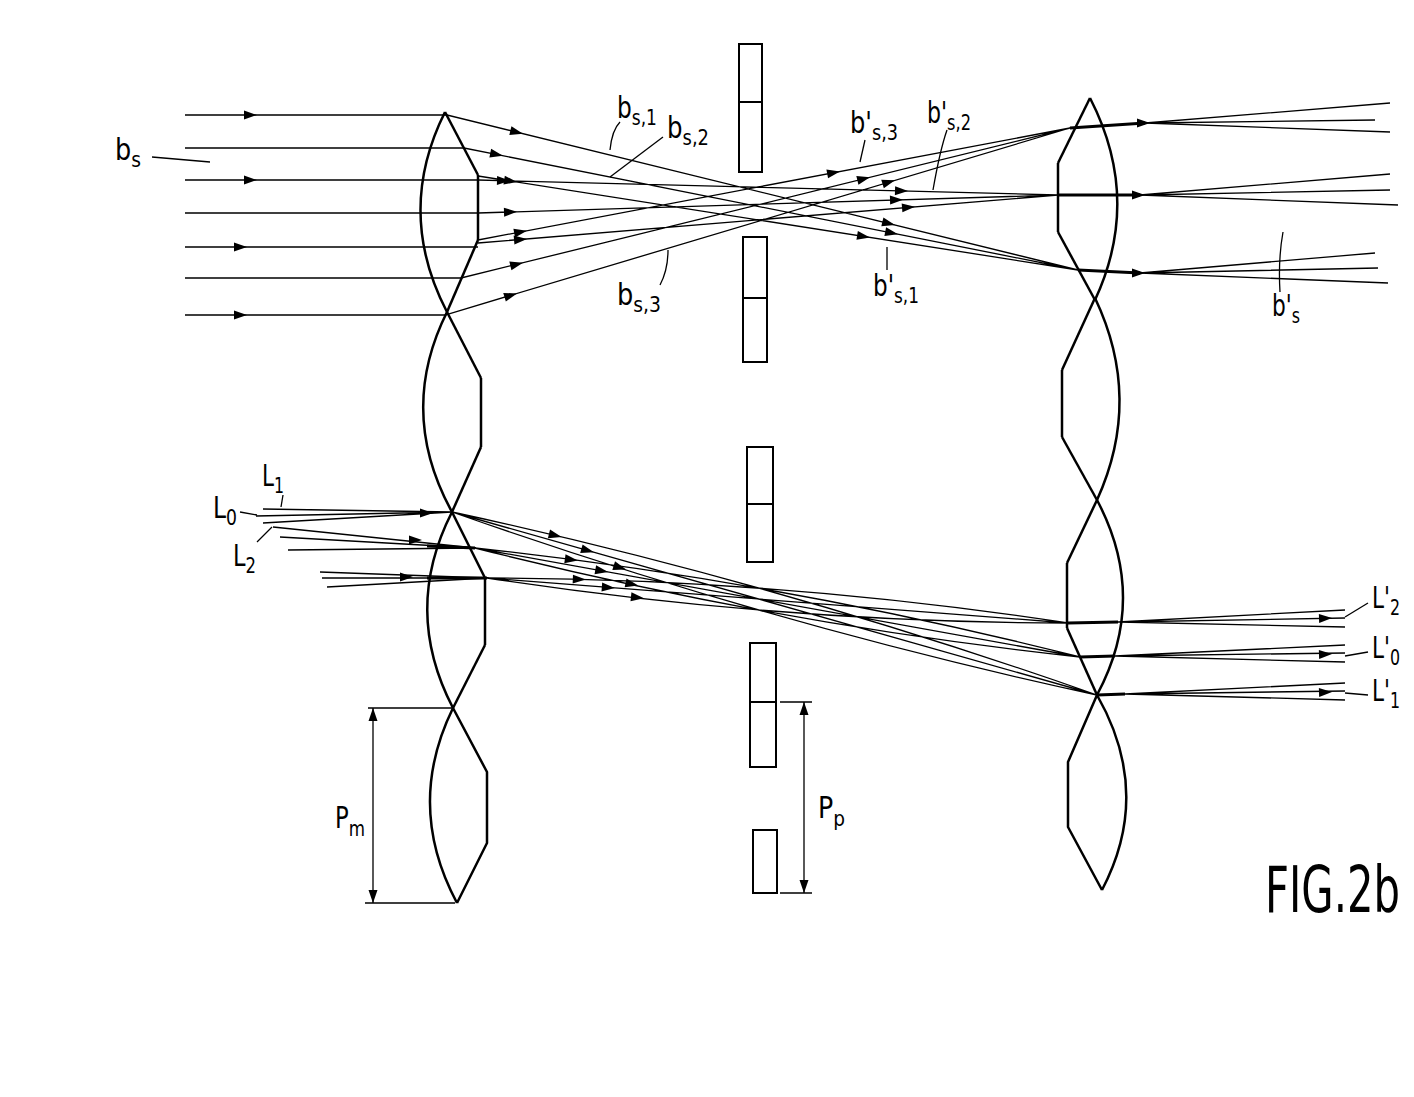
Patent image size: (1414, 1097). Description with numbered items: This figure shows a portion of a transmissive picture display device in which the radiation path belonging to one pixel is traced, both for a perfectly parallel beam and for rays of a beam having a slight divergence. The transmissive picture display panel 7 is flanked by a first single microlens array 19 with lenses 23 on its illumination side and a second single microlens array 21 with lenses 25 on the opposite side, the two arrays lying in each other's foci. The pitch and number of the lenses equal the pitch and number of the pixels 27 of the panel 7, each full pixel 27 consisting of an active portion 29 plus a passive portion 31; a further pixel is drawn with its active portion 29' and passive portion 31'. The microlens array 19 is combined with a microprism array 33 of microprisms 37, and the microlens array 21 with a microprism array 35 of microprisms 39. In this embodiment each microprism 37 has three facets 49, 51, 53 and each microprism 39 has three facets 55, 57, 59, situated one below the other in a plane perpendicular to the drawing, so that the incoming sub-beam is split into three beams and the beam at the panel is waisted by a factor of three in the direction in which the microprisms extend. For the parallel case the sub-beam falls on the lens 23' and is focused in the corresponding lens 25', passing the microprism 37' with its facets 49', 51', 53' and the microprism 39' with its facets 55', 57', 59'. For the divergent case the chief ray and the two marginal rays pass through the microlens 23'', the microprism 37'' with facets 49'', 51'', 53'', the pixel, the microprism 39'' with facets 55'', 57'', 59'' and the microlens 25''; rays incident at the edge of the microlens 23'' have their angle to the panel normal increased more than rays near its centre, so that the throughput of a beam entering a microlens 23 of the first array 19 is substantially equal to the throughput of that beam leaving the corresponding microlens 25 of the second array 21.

The picture display panel 7 is at (745, 871).
The first microlens array 19 is at (365, 880).
The second microlens array 21 is at (1127, 858).
The microlens 23 is at (416, 412).
The microlens 23' is at (413, 197).
The microlens 23'' is at (410, 610).
The microlens 25 is at (1136, 399).
The microlens 25' is at (1124, 184).
The microlens 25'' is at (1142, 597).
The pixel 27 is at (731, 305).
The active portion 29 is at (784, 475).
The transparent grating strip 29' is at (782, 203).
The passive portion 31 is at (782, 299).
The opaque grating strip 31' is at (779, 108).
The microprism array 33 is at (487, 870).
The microprism array 35 is at (1075, 862).
The microprism 37 is at (456, 410).
The microprism 37' is at (486, 205).
The microprism 37'' is at (465, 598).
The microprism 39 is at (1089, 399).
The lens body 39' is at (1078, 191).
The microprism 39'' is at (1093, 609).
The facet 49 is at (489, 479).
The lower prism facet 49' is at (504, 285).
The lower prism facet 49'' is at (490, 679).
The facet 51 is at (506, 412).
The planar facet 51' is at (535, 171).
The planar facet 51'' is at (515, 611).
The facet 53 is at (479, 343).
The upper prism facet 53' is at (470, 127).
The upper prism facet 53'' is at (507, 530).
The facet 55 is at (1057, 468).
The lower prism facet 55' is at (1056, 273).
The lower prism facet 55'' is at (1053, 680).
The facet 57 is at (1032, 403).
The planar facet 57' is at (1031, 203).
The planar facet 57'' is at (1032, 595).
The facet 59 is at (1055, 334).
The upper prism facet 59' is at (1067, 116).
The upper prism facet 59'' is at (1057, 525).